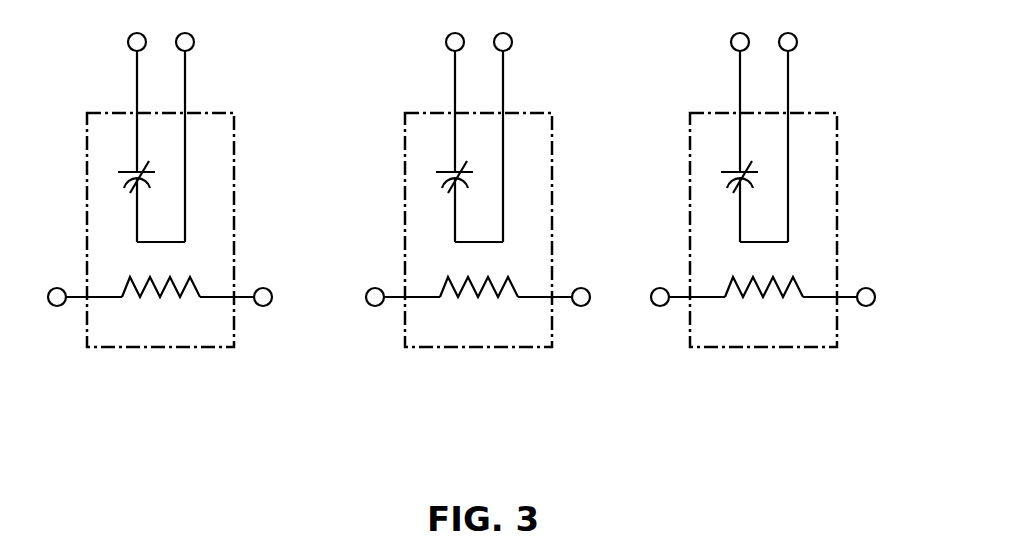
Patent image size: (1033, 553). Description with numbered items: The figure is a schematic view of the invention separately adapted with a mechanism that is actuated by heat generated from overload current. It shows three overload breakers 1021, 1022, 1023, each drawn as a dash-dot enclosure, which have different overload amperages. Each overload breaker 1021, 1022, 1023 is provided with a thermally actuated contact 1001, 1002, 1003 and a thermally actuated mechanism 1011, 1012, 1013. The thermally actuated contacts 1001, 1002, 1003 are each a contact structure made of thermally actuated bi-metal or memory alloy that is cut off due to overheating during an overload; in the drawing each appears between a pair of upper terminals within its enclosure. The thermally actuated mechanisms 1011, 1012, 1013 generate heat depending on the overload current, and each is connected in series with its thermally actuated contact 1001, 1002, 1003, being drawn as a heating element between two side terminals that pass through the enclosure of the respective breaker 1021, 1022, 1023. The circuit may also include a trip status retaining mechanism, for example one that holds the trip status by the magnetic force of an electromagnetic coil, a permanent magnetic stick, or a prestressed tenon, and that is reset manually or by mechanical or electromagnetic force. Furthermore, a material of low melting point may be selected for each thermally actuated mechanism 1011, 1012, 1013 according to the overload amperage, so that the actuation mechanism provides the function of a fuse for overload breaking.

The thermally actuated contact 1001 is at (130, 167).
The thermally actuated contact 1002 is at (435, 137).
The thermally actuated contact 1003 is at (720, 137).
The thermally actuated mechanism 1011 is at (150, 296).
The thermally actuated mechanism 1012 is at (478, 343).
The thermally actuated mechanism 1013 is at (763, 343).
The overload breaker 1021 is at (233, 228).
The overload breaker 1022 is at (535, 230).
The overload breaker 1023 is at (820, 230).